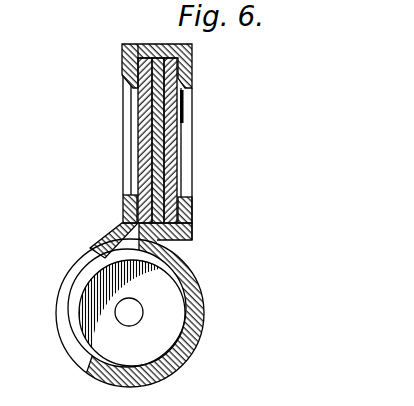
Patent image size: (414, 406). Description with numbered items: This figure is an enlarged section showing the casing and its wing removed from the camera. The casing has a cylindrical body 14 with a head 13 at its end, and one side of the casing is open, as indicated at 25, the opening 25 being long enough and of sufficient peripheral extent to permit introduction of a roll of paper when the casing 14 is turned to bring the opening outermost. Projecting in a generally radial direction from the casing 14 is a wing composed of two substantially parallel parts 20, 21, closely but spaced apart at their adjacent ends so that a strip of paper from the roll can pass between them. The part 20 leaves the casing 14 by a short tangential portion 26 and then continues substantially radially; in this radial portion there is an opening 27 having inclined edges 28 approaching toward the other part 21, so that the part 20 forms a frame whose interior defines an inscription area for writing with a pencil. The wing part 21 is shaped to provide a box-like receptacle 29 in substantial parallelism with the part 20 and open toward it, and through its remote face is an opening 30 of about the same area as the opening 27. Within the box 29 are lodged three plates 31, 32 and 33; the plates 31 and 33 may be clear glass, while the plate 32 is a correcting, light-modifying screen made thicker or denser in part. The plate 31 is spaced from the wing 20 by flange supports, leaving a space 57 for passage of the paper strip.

The space 57 is at (138, 45).
The wing part 20 is at (122, 66).
The wing part 21 is at (192, 70).
The plate 31 is at (142, 108).
The plate 32 is at (177, 147).
The plate 33 is at (181, 125).
The opening 30 is at (184, 180).
The opening 27 is at (131, 165).
The inclined edges 28 is at (123, 200).
The tangential portion 26 is at (103, 236).
The box-like receptacle 29 is at (158, 241).
The opening 25 is at (68, 337).
The cylindrical body 14 is at (203, 303).
The head 13 is at (162, 338).